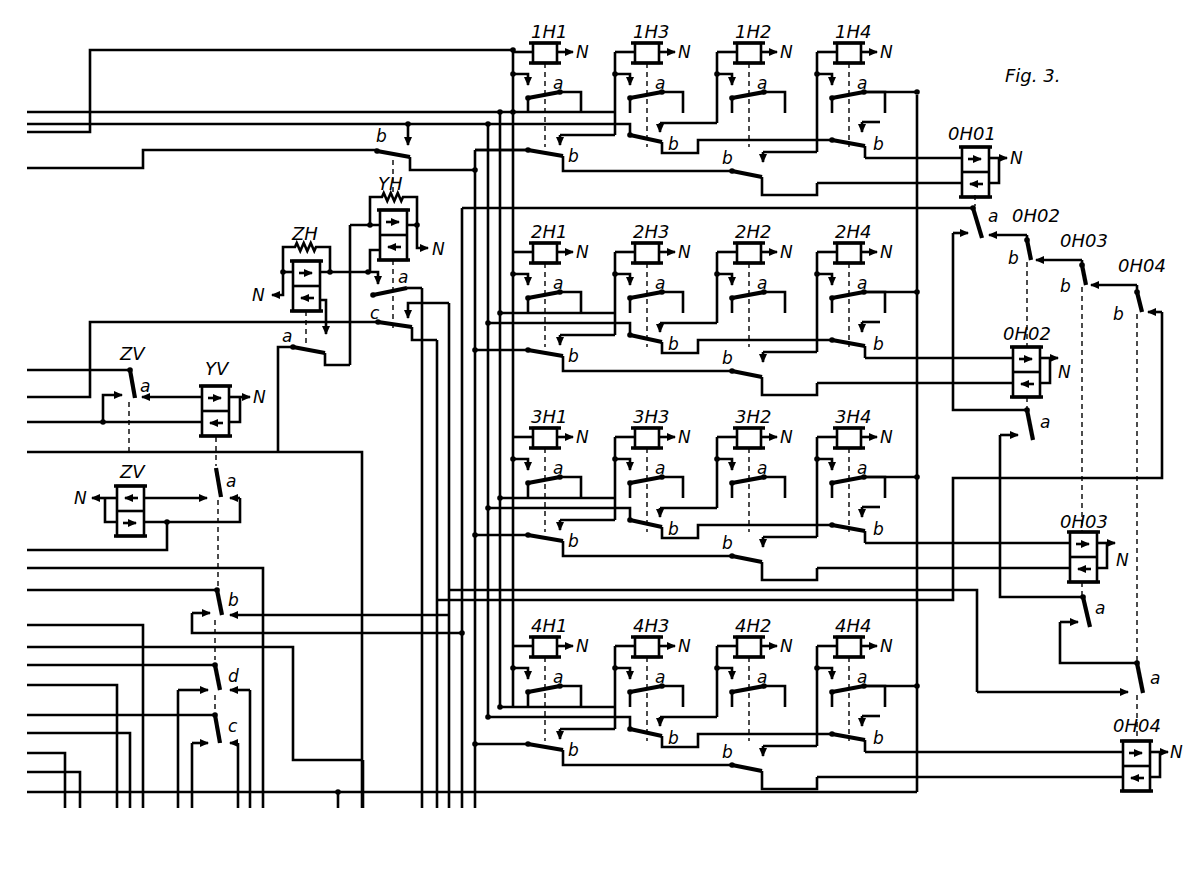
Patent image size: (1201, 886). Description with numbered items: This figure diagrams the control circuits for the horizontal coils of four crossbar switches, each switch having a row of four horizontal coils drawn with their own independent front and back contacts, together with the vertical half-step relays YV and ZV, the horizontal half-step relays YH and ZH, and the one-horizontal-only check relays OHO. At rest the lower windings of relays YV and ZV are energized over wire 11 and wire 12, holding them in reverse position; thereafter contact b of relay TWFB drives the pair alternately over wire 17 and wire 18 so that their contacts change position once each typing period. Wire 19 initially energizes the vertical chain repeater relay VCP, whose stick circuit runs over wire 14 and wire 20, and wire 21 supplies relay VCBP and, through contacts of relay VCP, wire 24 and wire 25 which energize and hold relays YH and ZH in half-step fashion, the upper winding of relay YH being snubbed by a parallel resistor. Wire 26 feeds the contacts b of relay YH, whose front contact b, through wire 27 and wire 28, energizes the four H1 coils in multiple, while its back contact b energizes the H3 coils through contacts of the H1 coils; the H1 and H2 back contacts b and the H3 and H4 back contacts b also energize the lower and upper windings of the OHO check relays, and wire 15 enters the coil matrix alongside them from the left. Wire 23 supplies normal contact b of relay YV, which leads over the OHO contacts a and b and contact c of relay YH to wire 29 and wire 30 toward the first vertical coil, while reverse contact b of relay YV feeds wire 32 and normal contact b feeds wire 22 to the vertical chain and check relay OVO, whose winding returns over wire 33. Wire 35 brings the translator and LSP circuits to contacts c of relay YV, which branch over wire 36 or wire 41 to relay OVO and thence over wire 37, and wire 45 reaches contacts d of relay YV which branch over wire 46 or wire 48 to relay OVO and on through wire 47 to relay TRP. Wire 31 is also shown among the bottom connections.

The wire 11 is at (50, 408).
The wire 12 is at (50, 538).
The wire 14 is at (50, 781).
The conductor 15 is at (50, 101).
The wire 17 is at (50, 353).
The wire 18 is at (50, 436).
The wire 19 is at (50, 558).
The wire 20 is at (338, 800).
The wire 21 is at (50, 761).
The wire 22 is at (462, 752).
The wire 23 is at (50, 579).
The wire 24 is at (363, 777).
The wire 25 is at (423, 800).
The wire 26 is at (50, 158).
The wire 27 is at (50, 140).
The wire 28 is at (50, 121).
The wire 29 is at (50, 383).
The wire 30 is at (50, 743).
The conductor 31 is at (50, 635).
The wire 32 is at (450, 800).
The wire 33 is at (50, 613).
The wire 35 is at (50, 704).
The wire 36 is at (238, 800).
The wire 37 is at (50, 724).
The wire 41 is at (192, 778).
The wire 45 is at (50, 654).
The wire 46 is at (182, 750).
The wire 47 is at (50, 674).
The wire 48 is at (250, 765).